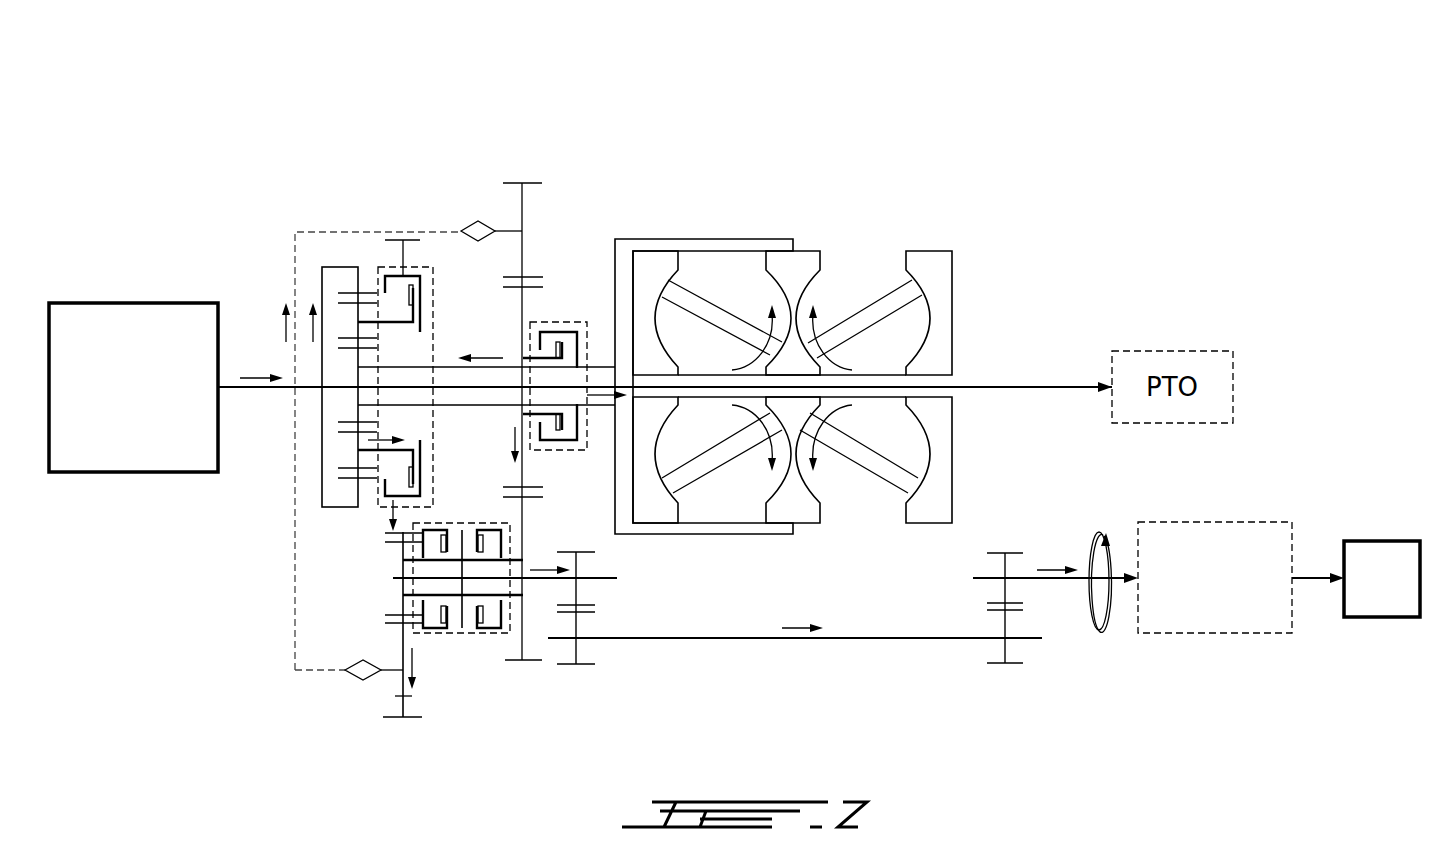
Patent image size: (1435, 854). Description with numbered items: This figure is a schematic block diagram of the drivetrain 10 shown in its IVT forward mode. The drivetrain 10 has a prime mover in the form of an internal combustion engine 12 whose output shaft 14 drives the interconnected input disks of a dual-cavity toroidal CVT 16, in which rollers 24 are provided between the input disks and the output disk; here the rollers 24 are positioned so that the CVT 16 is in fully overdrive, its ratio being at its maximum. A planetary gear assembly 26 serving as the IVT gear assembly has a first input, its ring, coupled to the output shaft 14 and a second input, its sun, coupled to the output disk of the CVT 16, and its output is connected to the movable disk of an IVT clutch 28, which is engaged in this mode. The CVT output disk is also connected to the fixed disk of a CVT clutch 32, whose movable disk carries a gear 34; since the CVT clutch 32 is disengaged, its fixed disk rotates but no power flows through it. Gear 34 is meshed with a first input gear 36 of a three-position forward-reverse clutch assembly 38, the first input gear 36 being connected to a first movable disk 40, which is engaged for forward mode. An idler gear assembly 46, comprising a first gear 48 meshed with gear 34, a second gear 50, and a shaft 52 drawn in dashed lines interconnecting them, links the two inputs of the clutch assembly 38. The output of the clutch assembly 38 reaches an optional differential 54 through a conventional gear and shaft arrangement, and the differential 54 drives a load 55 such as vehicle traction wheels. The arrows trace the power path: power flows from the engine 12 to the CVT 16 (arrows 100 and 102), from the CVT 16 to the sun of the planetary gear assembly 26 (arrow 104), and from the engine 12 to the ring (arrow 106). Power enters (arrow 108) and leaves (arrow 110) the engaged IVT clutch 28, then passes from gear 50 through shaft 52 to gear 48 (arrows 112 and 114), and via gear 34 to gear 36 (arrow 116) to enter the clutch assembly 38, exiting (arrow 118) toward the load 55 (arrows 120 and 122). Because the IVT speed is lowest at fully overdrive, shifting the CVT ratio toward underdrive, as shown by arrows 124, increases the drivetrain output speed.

The drivetrain 10 is at (953, 139).
The internal combustion engine 12 is at (136, 303).
The output shaft 14 is at (262, 396).
The dual-cavity toroidal CVT 16 is at (825, 353).
The rollers 24 is at (880, 305).
The planetary gear assembly 26 is at (343, 258).
The IVT clutch 28 is at (428, 267).
The CVT clutch 32 is at (573, 322).
The gear 34 is at (523, 474).
The first input gear 36 is at (523, 535).
The three-position forward-reverse clutch assembly 38 is at (457, 634).
The first movable disk 40 is at (485, 623).
The idler gear assembly 46 is at (325, 700).
The first gear 48 is at (522, 204).
The second gear 50 is at (403, 696).
The shaft 52 is at (294, 626).
The differential 54 is at (1213, 635).
The load 55 is at (1384, 541).
The arrow 100 is at (255, 377).
The arrow 102 is at (611, 400).
The arrow 104 is at (487, 358).
The arrow 106 is at (310, 335).
The arrow 108 is at (387, 434).
The arrow 110 is at (383, 511).
The arrow 112 is at (413, 661).
The arrow 114 is at (284, 334).
The arrow 116 is at (512, 443).
The arrow 118 is at (545, 572).
The arrow 120 is at (796, 628).
The arrow 122 is at (1047, 568).
The arrows 124 is at (840, 302).